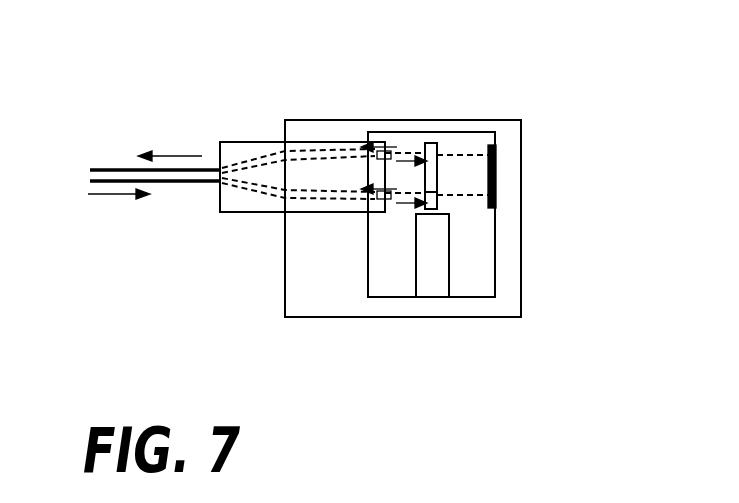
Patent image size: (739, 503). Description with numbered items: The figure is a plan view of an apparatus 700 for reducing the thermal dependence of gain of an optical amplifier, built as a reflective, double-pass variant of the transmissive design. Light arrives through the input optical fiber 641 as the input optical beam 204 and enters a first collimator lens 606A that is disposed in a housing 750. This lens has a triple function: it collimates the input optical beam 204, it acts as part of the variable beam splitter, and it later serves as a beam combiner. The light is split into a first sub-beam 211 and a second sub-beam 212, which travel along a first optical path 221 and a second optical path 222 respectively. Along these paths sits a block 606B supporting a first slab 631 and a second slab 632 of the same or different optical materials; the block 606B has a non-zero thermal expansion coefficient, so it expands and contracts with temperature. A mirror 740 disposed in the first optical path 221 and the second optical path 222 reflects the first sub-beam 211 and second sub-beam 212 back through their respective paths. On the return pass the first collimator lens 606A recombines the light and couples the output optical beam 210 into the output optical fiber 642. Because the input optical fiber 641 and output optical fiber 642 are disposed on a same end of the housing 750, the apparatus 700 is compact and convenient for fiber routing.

The apparatus 700 is at (577, 33).
The first collimator lens 606A is at (241, 142).
The block 606B is at (449, 263).
The output optical fiber 642 is at (107, 169).
The input optical fiber 641 is at (190, 182).
The output optical beam 210 is at (163, 156).
The input optical beam 204 is at (113, 194).
The second optical path 222 is at (292, 153).
The first optical path 221 is at (318, 195).
The housing 750 is at (383, 120).
The second sub-beam 212 is at (403, 161).
The first sub-beam 211 is at (410, 205).
The second slab 632 is at (437, 143).
The first slab 631 is at (448, 207).
The mirror 740 is at (496, 182).